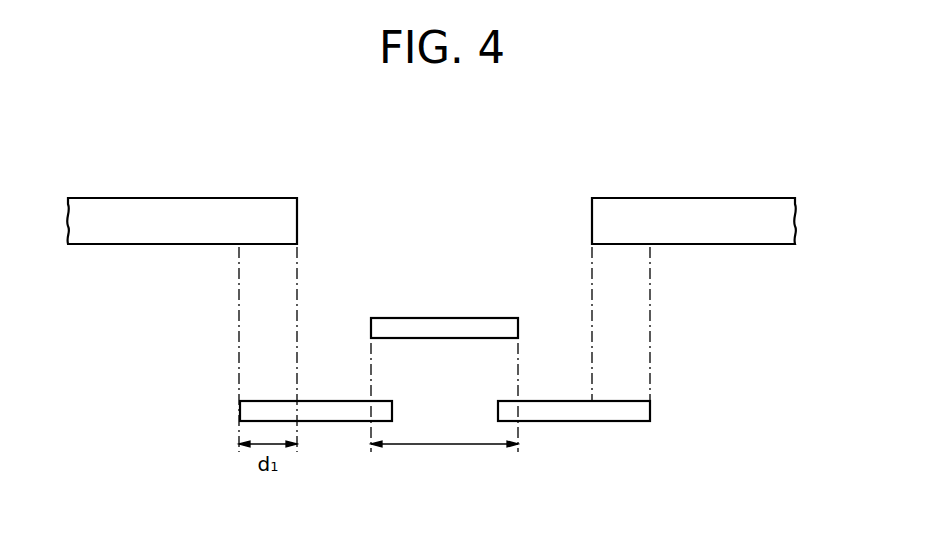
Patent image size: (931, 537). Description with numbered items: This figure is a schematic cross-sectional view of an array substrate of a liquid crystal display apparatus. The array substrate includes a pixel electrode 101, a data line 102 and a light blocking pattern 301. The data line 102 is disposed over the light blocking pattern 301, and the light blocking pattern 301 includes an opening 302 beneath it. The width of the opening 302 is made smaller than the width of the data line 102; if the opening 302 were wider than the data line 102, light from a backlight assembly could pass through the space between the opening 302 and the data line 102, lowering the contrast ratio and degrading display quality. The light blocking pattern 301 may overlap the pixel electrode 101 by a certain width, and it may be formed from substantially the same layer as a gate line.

The pixel electrode 101 is at (267, 200).
The data line 102 is at (500, 318).
The light blocking pattern 301 is at (625, 416).
The opening 302 is at (418, 410).